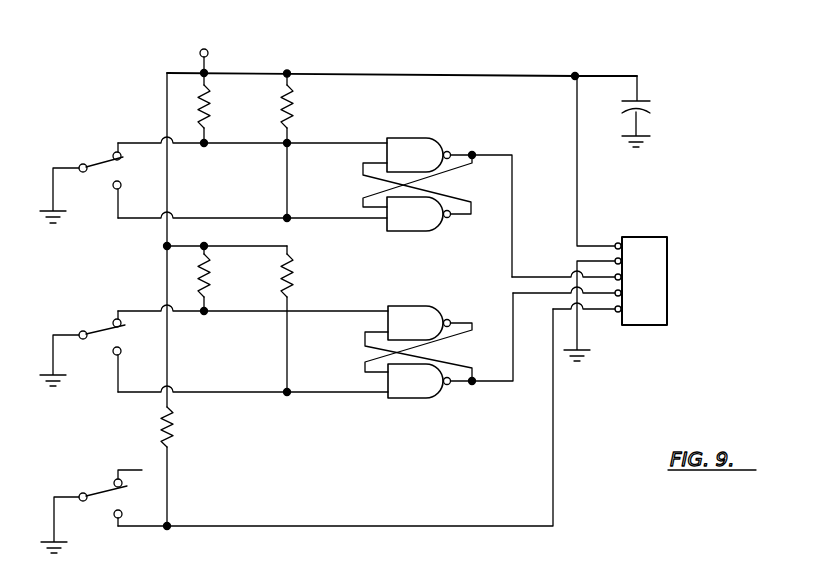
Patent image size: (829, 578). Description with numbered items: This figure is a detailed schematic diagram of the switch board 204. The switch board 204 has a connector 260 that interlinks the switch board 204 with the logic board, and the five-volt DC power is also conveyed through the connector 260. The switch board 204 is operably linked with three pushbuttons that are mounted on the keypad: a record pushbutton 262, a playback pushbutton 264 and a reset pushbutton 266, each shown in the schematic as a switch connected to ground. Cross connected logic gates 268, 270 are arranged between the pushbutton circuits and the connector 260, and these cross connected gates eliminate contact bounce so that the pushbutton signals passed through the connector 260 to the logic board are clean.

The switch board 204 is at (402, 58).
The connector 260 is at (668, 277).
The record pushbutton 262 is at (99, 158).
The playback pushbutton 264 is at (102, 327).
The reset pushbutton 266 is at (99, 480).
The cross connected logic gate 268 is at (400, 232).
The cross connected logic gate 270 is at (397, 400).